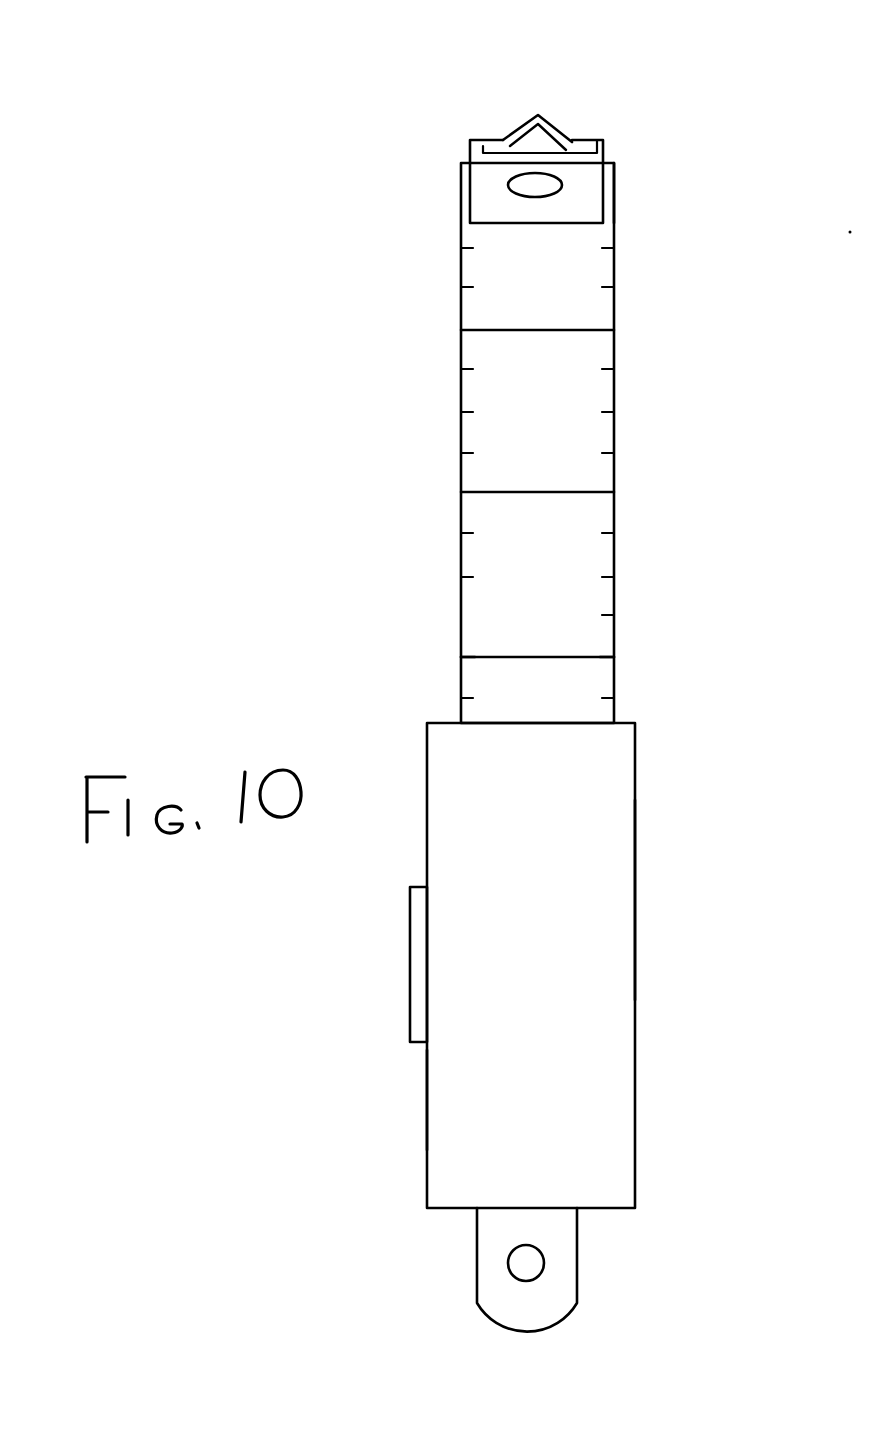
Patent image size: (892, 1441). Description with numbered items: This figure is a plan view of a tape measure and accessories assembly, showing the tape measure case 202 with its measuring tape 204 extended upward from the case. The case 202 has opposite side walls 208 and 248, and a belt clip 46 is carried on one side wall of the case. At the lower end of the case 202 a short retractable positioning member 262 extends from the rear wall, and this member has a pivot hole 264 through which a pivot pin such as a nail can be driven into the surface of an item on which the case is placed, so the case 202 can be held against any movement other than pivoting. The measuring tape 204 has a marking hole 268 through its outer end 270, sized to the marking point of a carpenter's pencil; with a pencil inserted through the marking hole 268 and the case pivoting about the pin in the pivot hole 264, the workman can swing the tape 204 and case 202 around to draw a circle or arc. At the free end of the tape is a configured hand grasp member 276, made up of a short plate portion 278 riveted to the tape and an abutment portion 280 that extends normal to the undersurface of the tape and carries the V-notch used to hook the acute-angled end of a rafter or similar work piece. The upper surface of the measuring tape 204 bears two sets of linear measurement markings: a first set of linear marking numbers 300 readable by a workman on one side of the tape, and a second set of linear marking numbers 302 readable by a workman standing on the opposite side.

The belt clip 46 is at (410, 972).
The tape measure case 202 is at (635, 817).
The measuring tape 204 is at (614, 480).
The side wall 208 is at (635, 957).
The side wall 248 is at (420, 1095).
The retractable positioning member 262 is at (577, 1268).
The pivot hole 264 is at (524, 1263).
The marking hole 268 is at (543, 184).
The outer end 270 is at (612, 163).
The hand grasp member 276 is at (556, 130).
The plate portion 278 is at (487, 203).
The abutment portion 280 is at (533, 118).
The first set of linear marking numbers 300 is at (580, 660).
The second set of linear marking numbers 302 is at (485, 658).